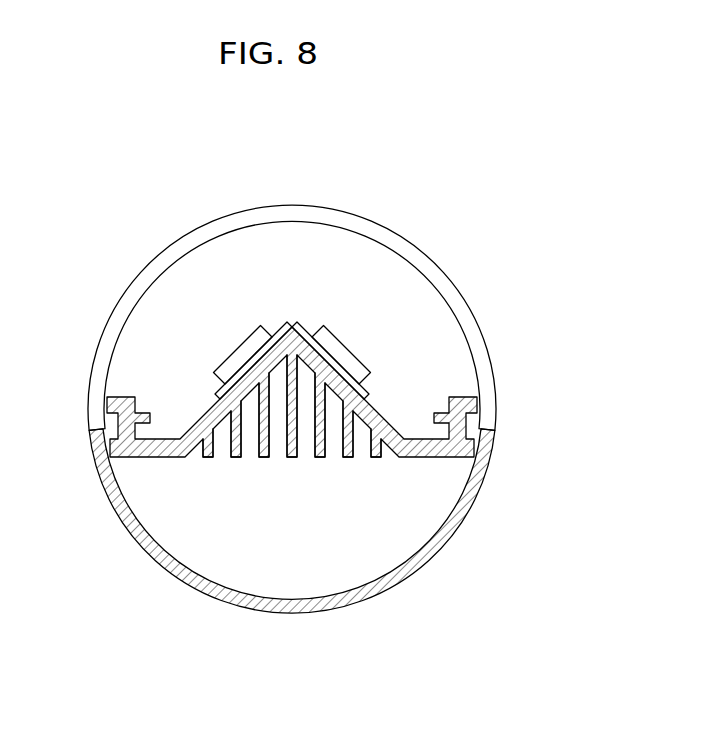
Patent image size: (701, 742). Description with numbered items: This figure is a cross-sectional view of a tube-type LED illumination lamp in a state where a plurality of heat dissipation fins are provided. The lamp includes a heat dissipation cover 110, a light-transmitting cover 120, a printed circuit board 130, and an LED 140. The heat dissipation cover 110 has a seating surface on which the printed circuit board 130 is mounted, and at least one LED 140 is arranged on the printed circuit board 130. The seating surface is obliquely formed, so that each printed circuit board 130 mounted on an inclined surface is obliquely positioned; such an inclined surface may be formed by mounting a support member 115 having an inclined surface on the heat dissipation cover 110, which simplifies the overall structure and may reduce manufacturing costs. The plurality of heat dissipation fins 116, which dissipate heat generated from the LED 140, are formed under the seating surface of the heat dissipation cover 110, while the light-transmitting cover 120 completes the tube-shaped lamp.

The heat dissipation cover 110 is at (397, 580).
The support member 115 is at (199, 403).
The heat dissipation fins 116 is at (237, 458).
The light-transmitting cover 120 is at (355, 225).
The printed circuit board 130 is at (300, 325).
The LED 140 is at (237, 351).